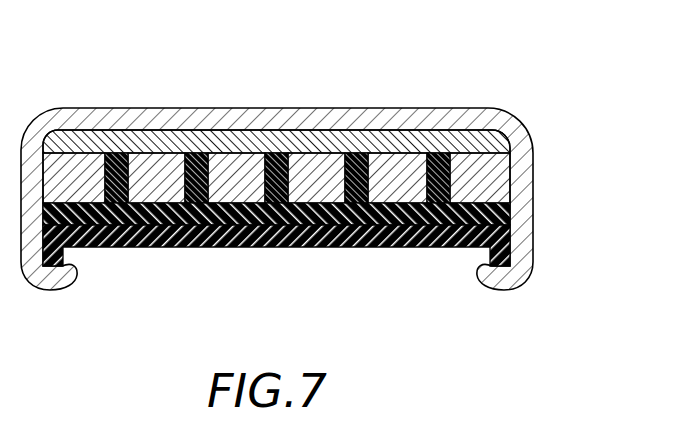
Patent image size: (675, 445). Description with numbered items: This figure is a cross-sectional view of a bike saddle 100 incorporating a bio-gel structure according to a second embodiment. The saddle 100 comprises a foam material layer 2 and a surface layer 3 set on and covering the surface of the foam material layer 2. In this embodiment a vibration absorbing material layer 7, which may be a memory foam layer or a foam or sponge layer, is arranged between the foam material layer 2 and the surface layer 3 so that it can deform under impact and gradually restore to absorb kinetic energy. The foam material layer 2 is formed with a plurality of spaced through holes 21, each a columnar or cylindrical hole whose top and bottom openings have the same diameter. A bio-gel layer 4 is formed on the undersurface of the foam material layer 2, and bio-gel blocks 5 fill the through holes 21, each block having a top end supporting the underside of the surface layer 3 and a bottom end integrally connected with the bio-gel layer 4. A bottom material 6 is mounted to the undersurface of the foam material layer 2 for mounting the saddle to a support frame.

The saddle 100 is at (178, 98).
The foam material layer 2 is at (505, 139).
The surface layer 3 is at (321, 113).
The vibration absorbing material layer 7 is at (350, 143).
The bio-gel blocks 5 is at (440, 158).
The through holes 21 is at (450, 187).
The bio-gel layer 4 is at (508, 212).
The bottom material 6 is at (325, 238).